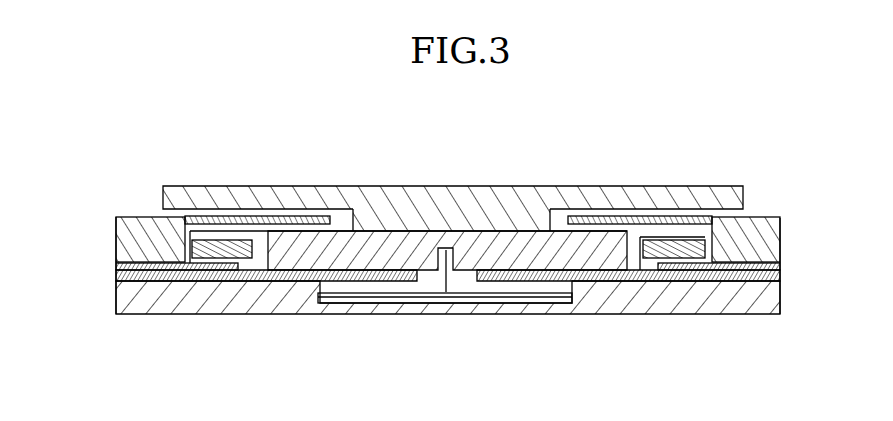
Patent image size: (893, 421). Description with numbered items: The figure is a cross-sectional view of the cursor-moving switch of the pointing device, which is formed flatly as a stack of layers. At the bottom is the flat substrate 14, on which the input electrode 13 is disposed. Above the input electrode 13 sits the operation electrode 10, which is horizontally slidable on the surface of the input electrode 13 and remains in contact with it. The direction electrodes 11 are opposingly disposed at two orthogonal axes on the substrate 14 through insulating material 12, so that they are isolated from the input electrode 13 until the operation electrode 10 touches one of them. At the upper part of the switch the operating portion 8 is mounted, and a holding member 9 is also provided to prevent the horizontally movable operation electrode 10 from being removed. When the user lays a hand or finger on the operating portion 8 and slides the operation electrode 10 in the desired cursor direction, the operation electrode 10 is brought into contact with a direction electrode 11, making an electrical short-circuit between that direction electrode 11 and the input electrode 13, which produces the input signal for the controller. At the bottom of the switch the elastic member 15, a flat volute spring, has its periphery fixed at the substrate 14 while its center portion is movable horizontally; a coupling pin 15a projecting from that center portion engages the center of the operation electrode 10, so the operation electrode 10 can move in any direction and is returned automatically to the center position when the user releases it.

The operating portion 8 is at (466, 198).
The holding member 9 is at (768, 218).
The operation electrode 10 is at (597, 257).
The direction electrode 11 is at (705, 249).
The insulating material 12 is at (122, 266).
The input electrode 13 is at (707, 277).
The substrate 14 is at (177, 305).
The elastic member 15 is at (403, 297).
The coupling pin 15a is at (452, 287).